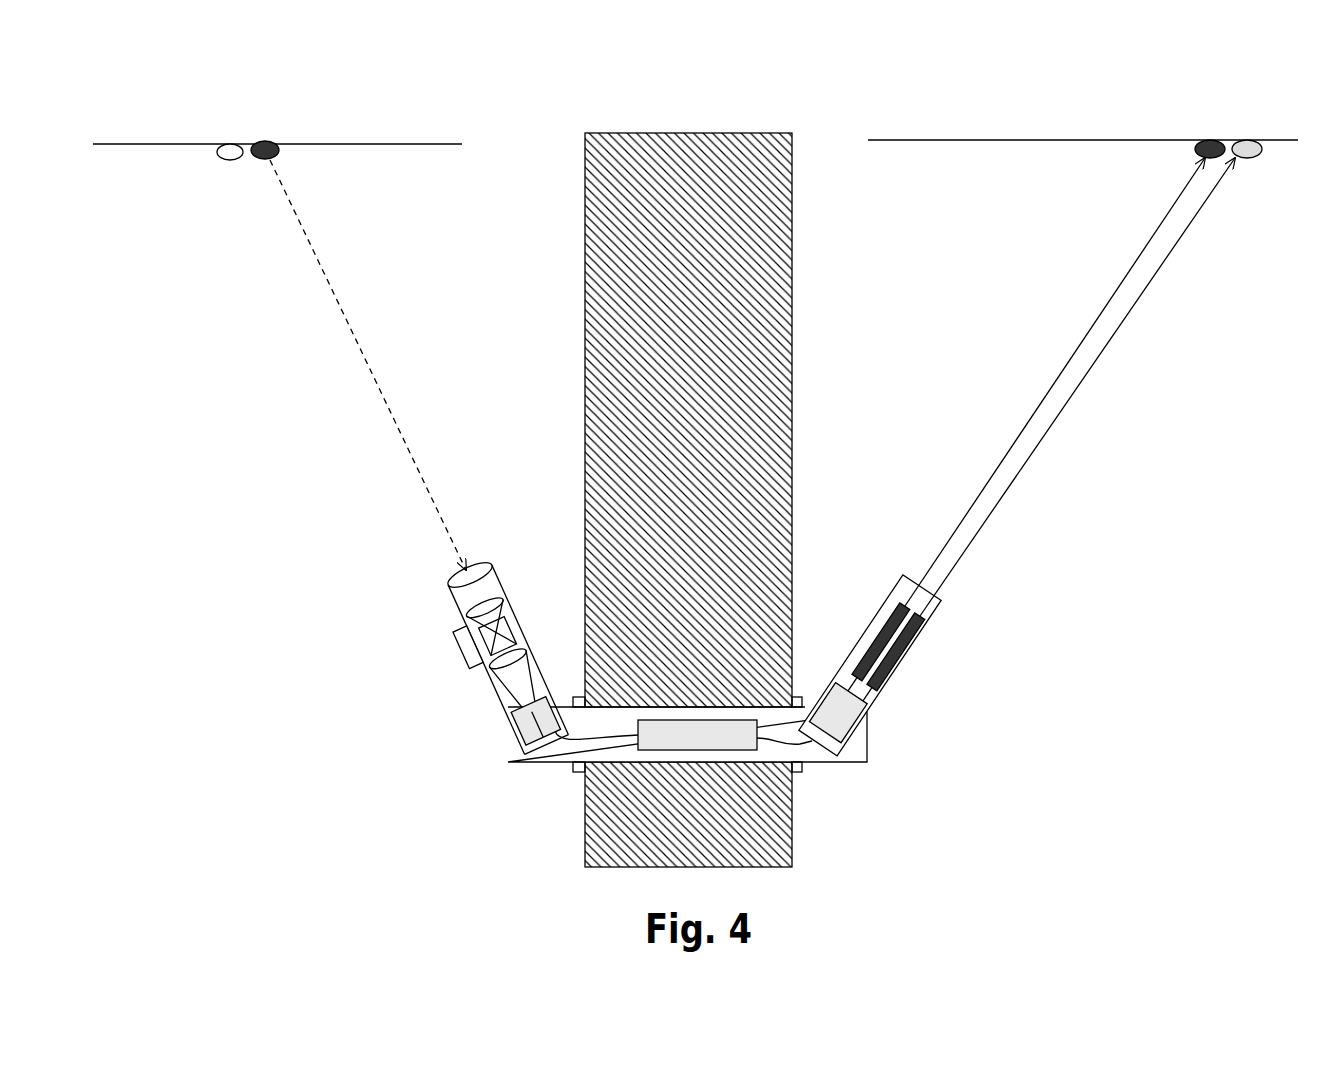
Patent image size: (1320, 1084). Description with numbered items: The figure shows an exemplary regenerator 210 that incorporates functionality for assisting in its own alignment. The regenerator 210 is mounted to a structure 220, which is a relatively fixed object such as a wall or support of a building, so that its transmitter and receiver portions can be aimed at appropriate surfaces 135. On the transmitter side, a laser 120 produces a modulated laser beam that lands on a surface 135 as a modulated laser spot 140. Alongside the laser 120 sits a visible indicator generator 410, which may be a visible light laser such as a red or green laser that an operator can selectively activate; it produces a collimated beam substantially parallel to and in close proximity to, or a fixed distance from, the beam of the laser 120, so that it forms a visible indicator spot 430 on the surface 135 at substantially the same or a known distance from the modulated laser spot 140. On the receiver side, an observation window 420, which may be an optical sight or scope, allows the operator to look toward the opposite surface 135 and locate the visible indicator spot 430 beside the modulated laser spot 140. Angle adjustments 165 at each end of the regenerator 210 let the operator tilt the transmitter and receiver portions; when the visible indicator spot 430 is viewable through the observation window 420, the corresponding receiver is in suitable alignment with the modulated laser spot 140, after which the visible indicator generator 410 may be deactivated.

The surface 135 is at (183, 143).
The visible indicator spot 430 is at (215, 163).
The modulated laser spot 140 is at (292, 158).
The structure 220 is at (724, 132).
The angle adjustment 165 is at (493, 737).
The regenerator 210 is at (633, 775).
The observation window 420 is at (460, 658).
The laser 120 is at (882, 625).
The visible indicator generator 410 is at (920, 657).